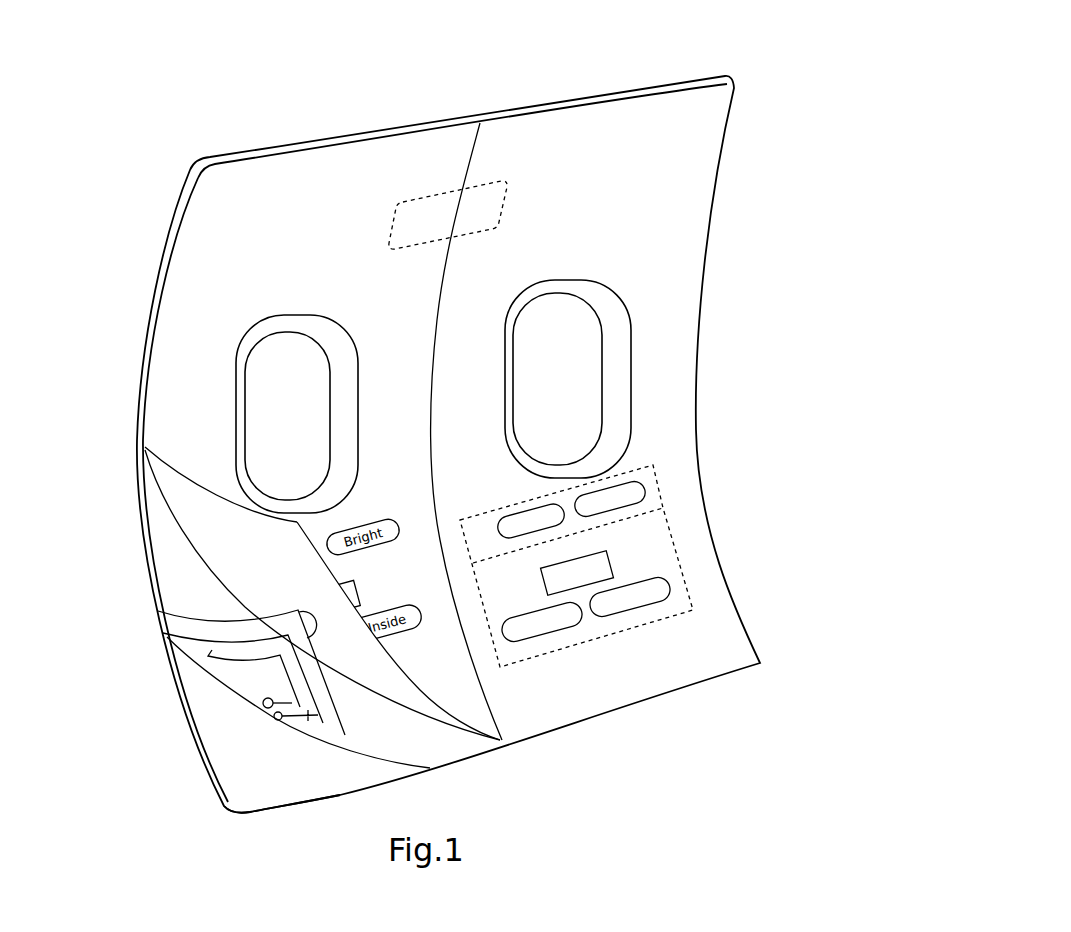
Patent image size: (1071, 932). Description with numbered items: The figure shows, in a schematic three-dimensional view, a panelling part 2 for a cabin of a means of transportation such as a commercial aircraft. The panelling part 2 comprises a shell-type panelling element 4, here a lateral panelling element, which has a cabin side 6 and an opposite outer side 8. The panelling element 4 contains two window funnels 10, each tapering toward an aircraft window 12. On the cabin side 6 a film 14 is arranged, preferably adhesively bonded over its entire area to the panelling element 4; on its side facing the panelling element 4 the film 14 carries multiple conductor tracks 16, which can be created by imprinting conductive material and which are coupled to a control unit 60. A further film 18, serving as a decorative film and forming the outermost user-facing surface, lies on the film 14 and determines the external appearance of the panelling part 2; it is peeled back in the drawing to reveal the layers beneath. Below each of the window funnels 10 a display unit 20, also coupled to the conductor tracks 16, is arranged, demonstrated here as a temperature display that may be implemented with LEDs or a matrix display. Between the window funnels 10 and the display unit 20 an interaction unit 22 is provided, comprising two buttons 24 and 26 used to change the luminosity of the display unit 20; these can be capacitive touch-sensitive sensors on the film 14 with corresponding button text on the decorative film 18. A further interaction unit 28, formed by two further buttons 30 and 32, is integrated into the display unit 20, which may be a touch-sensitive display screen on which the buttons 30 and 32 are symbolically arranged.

The panelling part 2 is at (474, 105).
The panelling element 4 is at (220, 772).
The cabin side 6 is at (282, 771).
The outer side 8 is at (250, 820).
The window funnel 10 is at (306, 316).
The aircraft window 12 is at (584, 381).
The film 14 is at (342, 738).
The conductor tracks 16 is at (210, 652).
The decorative film 18 is at (197, 520).
The display unit 20 is at (635, 594).
The interaction unit 22 is at (658, 478).
The button 24 is at (531, 511).
The button 26 is at (633, 468).
The further interaction unit 28 is at (613, 624).
The further button 30 is at (563, 640).
The further button 32 is at (660, 590).
The control unit 60 is at (483, 198).